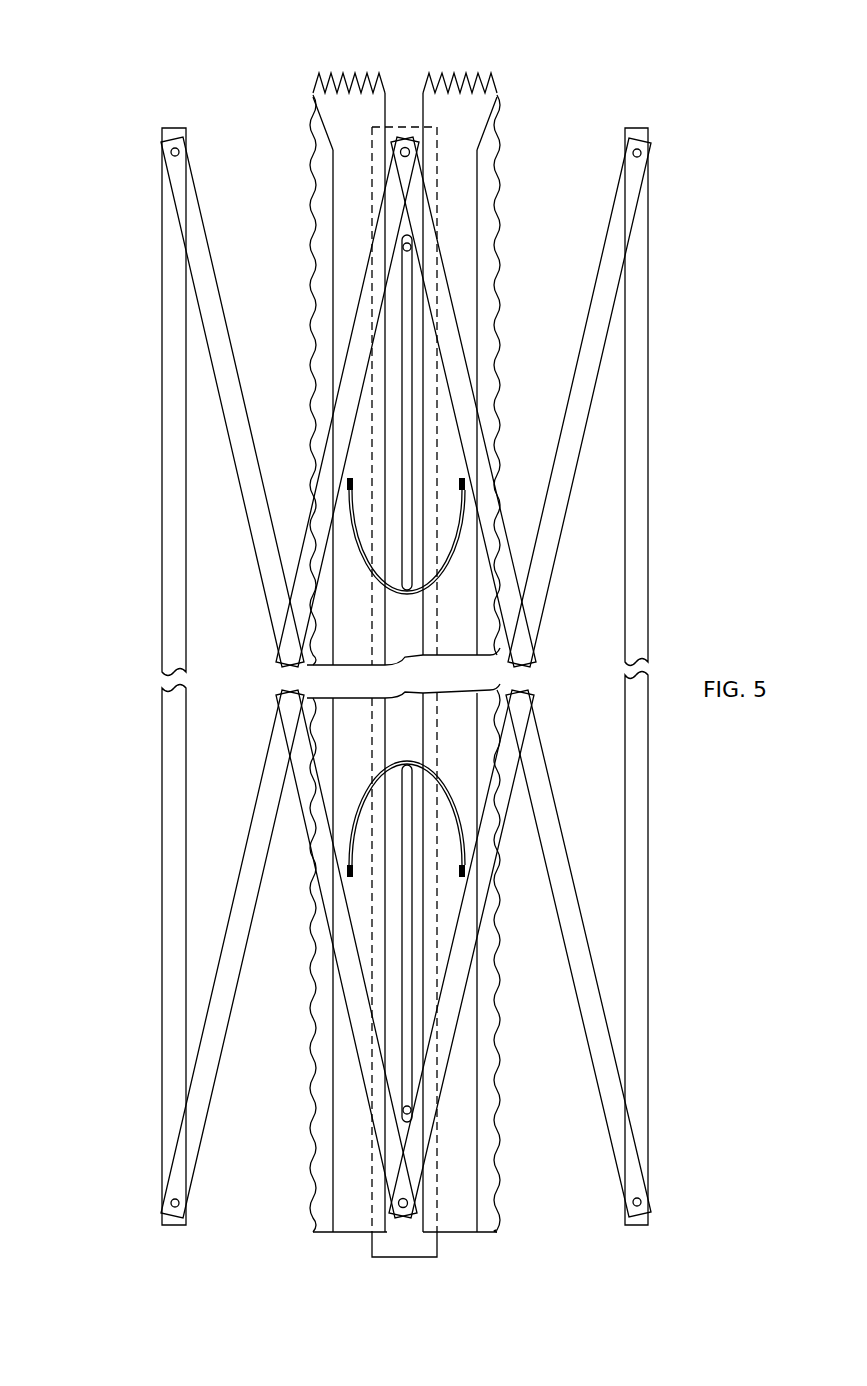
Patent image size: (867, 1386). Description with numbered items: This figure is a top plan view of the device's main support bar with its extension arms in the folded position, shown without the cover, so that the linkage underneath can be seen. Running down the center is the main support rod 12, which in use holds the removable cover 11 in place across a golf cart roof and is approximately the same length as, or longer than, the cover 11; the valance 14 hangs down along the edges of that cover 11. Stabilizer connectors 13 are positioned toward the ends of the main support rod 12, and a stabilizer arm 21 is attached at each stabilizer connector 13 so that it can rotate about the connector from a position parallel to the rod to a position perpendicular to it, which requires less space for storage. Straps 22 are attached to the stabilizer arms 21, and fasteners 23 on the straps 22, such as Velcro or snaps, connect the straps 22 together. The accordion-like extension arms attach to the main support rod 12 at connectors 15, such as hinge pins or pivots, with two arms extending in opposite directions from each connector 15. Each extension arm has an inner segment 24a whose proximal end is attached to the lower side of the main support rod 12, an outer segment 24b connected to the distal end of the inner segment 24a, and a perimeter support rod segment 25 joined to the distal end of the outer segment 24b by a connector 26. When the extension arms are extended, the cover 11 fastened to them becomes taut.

The removable cover 11 is at (362, 238).
The main support rod 12 is at (400, 127).
The stabilizer connector 13 is at (412, 250).
The valance 14 is at (325, 140).
The connector 15 is at (410, 158).
The stabilizer arm 21 is at (408, 400).
The strap 22 is at (458, 555).
The fastener 23 is at (465, 484).
The inner segment 24a is at (362, 345).
The outer segment 24b is at (245, 447).
The perimeter support rod segment 25 is at (182, 264).
The connector 26 is at (175, 152).